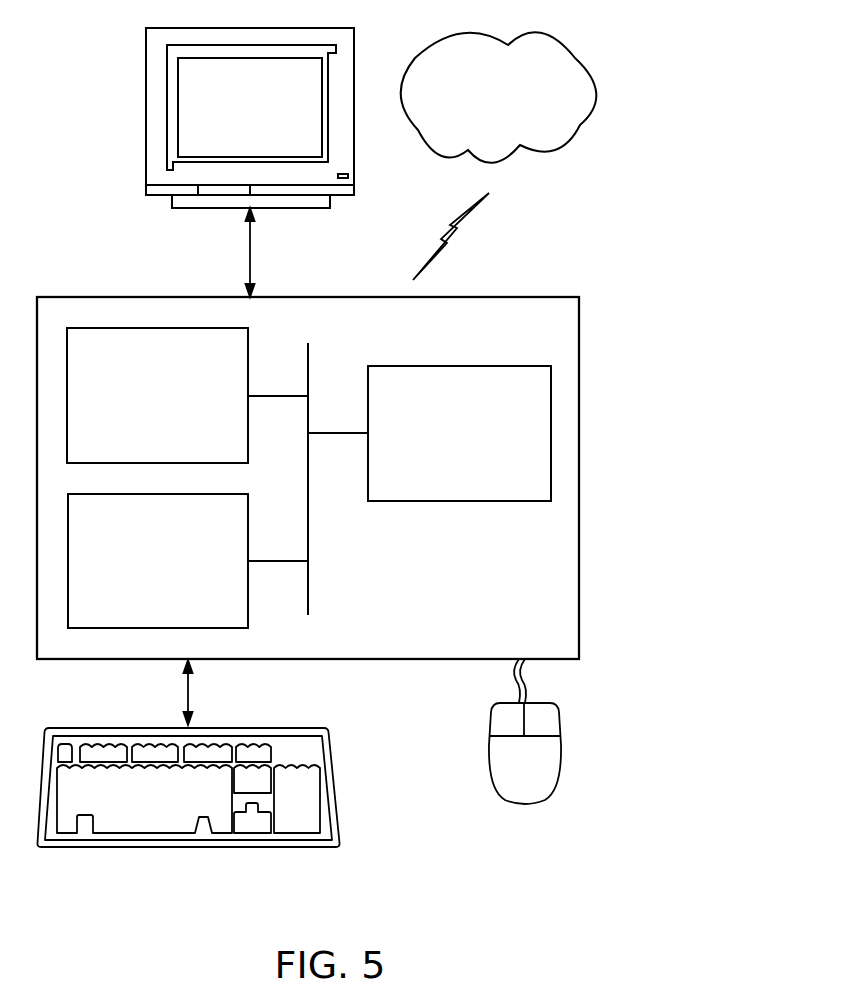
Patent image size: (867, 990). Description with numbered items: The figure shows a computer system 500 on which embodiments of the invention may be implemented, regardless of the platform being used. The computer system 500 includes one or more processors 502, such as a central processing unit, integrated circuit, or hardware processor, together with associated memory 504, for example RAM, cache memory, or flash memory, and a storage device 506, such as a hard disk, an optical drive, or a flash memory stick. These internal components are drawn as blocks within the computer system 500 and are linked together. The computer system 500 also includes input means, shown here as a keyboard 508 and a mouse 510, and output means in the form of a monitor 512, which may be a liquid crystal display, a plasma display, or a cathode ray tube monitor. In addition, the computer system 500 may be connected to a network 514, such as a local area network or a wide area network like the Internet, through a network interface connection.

The computer system 500 is at (626, 236).
The processor 502 is at (459, 433).
The memory 504 is at (157, 395).
The storage device 506 is at (158, 561).
The keyboard 508 is at (188, 787).
The mouse 510 is at (525, 731).
The monitor 512 is at (250, 118).
The network 514 is at (499, 97).